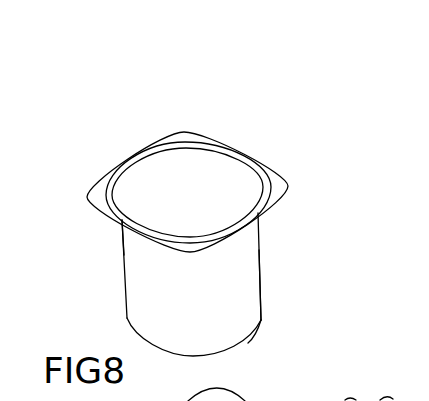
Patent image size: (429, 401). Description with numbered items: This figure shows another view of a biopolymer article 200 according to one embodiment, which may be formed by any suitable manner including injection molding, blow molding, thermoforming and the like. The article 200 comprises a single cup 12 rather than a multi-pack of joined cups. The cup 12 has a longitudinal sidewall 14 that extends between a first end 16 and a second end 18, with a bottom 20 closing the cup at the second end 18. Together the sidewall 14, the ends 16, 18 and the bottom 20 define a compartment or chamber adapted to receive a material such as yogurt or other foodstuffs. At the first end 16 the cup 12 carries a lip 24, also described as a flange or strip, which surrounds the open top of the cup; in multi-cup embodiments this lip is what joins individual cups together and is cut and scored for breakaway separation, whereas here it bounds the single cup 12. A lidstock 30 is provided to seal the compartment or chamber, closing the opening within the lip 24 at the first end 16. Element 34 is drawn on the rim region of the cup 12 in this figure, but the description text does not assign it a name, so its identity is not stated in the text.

The biopolymer article 200 is at (285, 160).
The lip 24 is at (97, 193).
The rim bead 34 is at (183, 131).
The lidstock 30 is at (213, 167).
The cup 12 is at (220, 302).
The longitudinal sidewall 14 is at (245, 275).
The first end 16 is at (123, 221).
The second end 18 is at (253, 322).
The bottom 20 is at (225, 342).